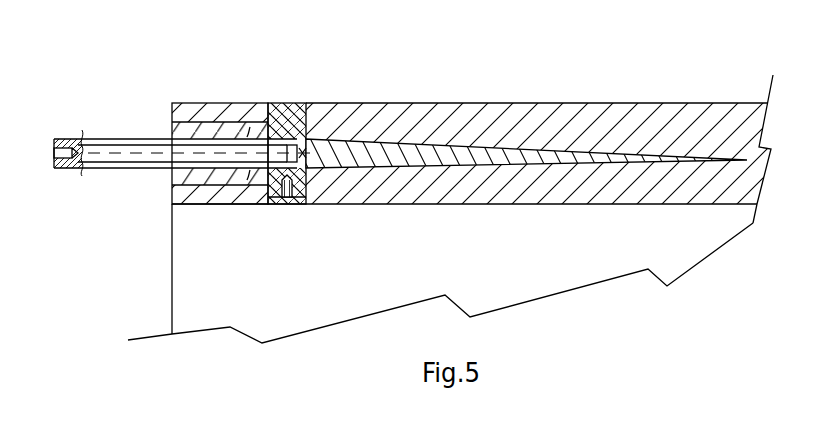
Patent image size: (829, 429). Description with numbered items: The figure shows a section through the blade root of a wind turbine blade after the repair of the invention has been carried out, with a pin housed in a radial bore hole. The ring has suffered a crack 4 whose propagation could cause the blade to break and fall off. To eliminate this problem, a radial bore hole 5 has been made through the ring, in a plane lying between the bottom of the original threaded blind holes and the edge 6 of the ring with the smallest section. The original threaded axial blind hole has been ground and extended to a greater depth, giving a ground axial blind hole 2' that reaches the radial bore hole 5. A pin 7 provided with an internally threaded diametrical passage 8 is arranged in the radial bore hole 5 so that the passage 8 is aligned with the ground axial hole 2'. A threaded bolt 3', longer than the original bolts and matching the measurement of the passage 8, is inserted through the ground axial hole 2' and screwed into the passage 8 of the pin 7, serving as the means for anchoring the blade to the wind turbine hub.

The ground axial blind hole 2' is at (408, 273).
The threaded bolt 3' is at (183, 103).
The crack 4 is at (220, 109).
The radial bore hole 5 is at (220, 92).
The edge 6 is at (539, 127).
The pin 7 is at (295, 109).
The diametrical passage 8 is at (239, 241).